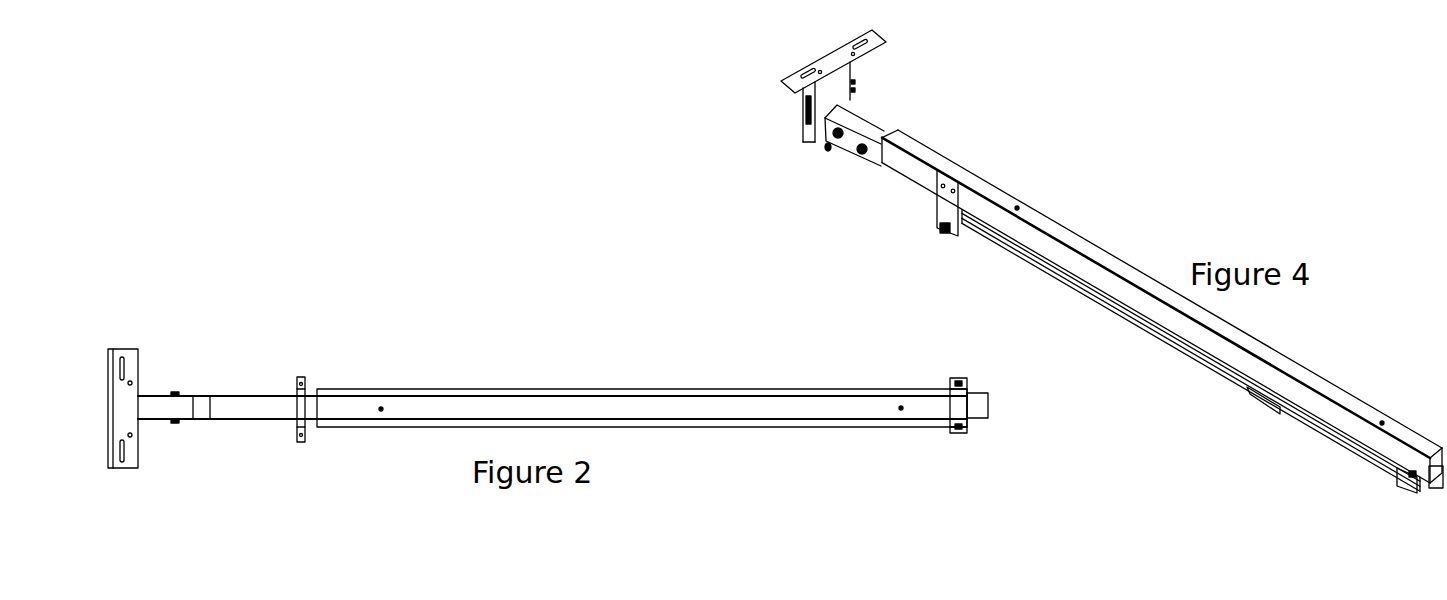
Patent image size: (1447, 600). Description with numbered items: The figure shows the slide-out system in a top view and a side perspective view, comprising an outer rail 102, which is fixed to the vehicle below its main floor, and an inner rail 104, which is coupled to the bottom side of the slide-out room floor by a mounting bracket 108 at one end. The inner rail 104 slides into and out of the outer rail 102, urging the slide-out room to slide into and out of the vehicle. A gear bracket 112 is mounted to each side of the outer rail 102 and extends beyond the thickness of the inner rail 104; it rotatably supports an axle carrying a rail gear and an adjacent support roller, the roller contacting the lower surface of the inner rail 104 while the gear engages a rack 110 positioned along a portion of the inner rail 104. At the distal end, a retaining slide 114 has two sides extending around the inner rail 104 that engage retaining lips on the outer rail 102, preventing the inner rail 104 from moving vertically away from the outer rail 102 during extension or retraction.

In FIG. 2, the outer rail 102 is at (355, 390).
In FIG. 4, the outer rail 102 is at (1055, 223).
In FIG. 2, the inner rail 104 is at (203, 420).
In FIG. 4, the inner rail 104 is at (890, 172).
In FIG. 2, the mounting bracket 108 is at (138, 349).
In FIG. 4, the mounting bracket 108 is at (838, 97).
In FIG. 4, the rack 110 is at (1010, 250).
In FIG. 4, the gear bracket 112 is at (937, 218).
In FIG. 2, the retaining slide 114 is at (957, 433).
In FIG. 4, the retaining slide 114 is at (1412, 493).